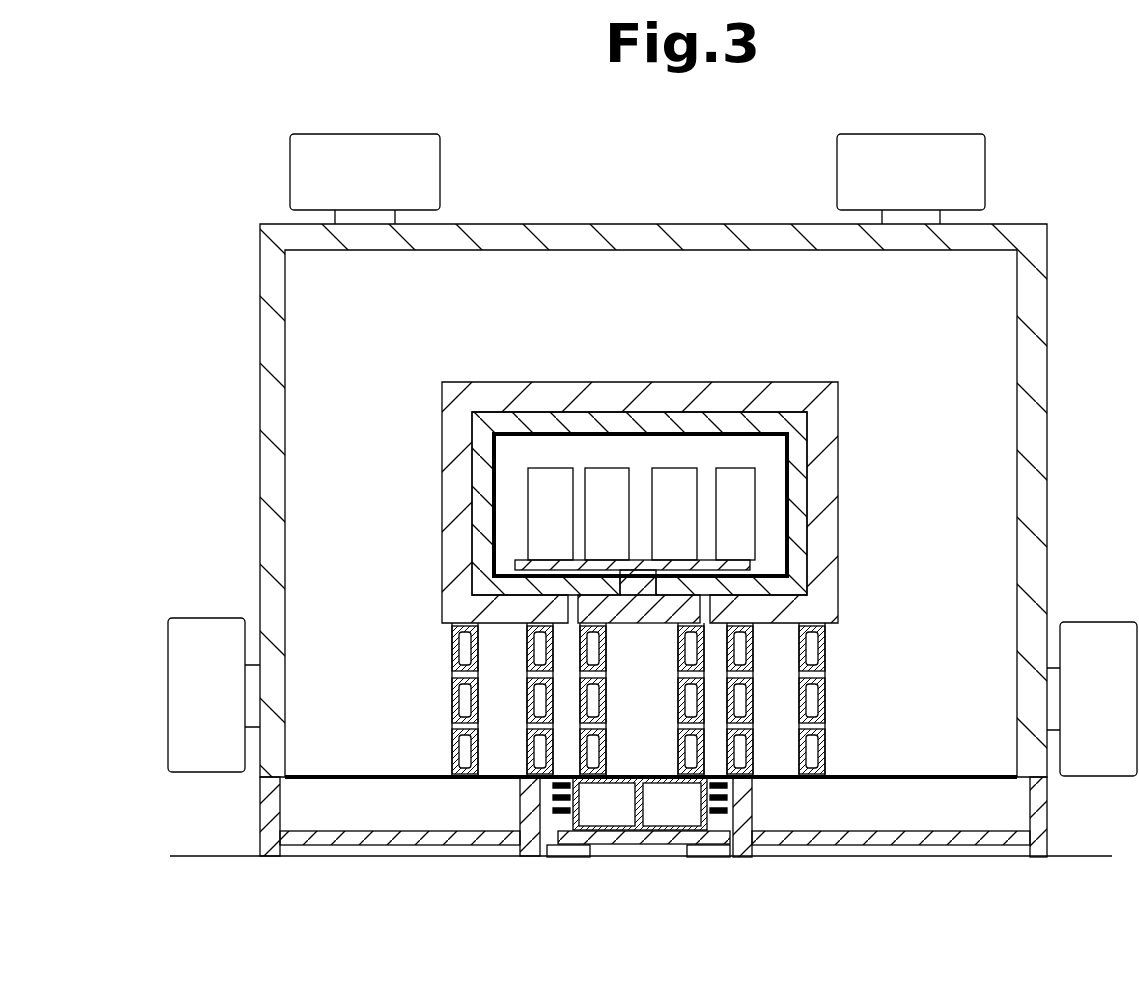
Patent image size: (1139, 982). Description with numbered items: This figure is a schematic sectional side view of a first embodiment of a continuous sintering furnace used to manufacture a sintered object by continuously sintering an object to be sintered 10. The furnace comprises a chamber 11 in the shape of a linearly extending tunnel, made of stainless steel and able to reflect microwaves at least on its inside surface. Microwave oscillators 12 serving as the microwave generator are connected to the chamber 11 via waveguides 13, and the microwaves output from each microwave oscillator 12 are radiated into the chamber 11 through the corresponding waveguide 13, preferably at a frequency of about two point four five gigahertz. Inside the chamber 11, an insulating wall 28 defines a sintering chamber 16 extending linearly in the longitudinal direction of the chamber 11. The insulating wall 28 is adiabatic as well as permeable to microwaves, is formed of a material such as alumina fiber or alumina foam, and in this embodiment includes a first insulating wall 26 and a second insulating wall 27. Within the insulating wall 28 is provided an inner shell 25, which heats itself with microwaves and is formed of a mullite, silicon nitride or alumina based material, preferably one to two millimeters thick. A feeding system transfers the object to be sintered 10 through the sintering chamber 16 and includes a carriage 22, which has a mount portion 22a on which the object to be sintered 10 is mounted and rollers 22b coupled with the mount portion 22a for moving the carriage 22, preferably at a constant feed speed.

The object to be sintered 10 is at (728, 467).
The chamber 11 is at (1047, 368).
The microwave oscillator 12 is at (440, 159).
The waveguide 13 is at (365, 217).
The sintering chamber 16 is at (597, 502).
The carriage 22 is at (663, 687).
The mount portion 22a is at (750, 562).
The rollers 22b is at (706, 880).
The inner shell 25 is at (548, 432).
The first insulating wall 26 is at (455, 487).
The second insulating wall 27 is at (480, 526).
The insulating wall 28 is at (572, 502).